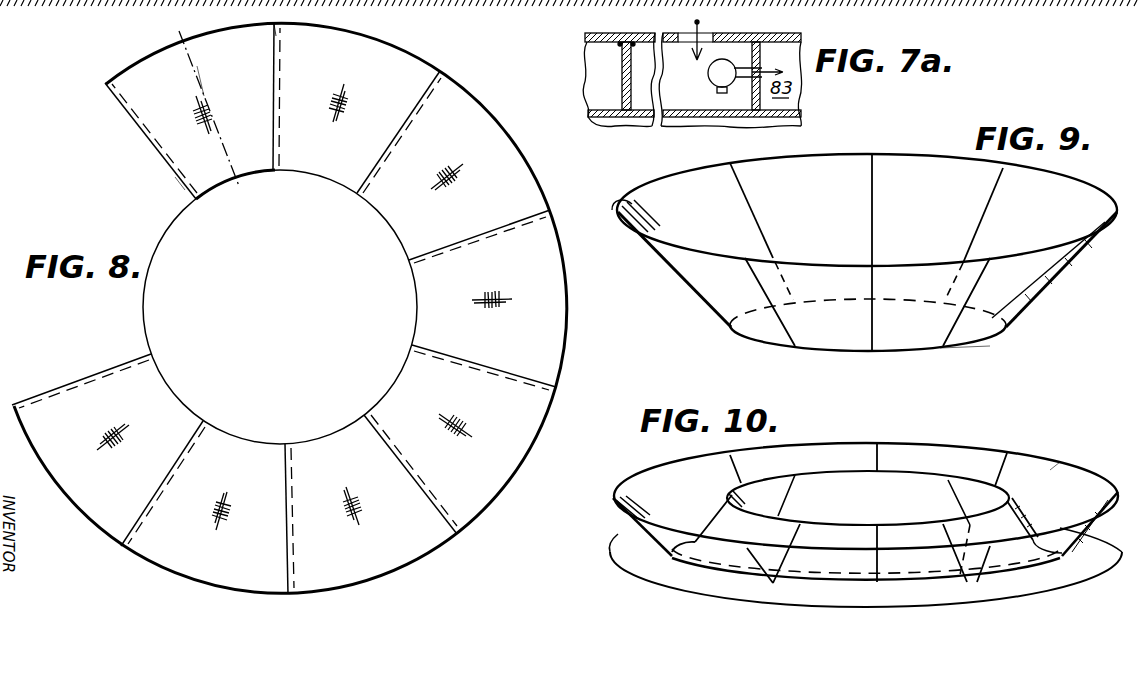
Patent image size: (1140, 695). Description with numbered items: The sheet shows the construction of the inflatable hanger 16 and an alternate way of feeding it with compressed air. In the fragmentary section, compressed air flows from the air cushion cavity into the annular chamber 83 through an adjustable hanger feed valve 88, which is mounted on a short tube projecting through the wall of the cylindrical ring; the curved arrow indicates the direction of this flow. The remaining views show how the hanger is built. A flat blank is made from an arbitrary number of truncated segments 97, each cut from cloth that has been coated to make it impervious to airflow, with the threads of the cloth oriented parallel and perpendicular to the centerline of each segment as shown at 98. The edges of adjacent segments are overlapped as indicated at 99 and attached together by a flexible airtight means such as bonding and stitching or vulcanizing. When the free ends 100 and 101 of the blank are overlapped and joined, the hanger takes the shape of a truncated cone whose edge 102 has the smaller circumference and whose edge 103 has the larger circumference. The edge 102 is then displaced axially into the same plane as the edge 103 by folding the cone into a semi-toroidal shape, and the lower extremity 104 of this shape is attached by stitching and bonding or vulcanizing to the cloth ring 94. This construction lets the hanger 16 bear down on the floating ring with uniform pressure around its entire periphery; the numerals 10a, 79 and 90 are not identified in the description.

In FIG. 7A, the wall structure 10a is at (594, 33).
In FIG. 8, the inflatable hanger 16 is at (94, 135).
In FIG. 9, the inflatable hanger 16 is at (688, 290).
In FIG. 10, the inflatable hanger 16 is at (865, 513).
In FIG. 7A, the inlet opening 79 is at (697, 22).
In FIG. 7A, the annular chamber 83 is at (612, 98).
In FIG. 7A, the adjustable hanger feed valve 88 is at (727, 59).
In FIG. 7A, the chamber 90 is at (698, 102).
In FIG. 10, the cloth ring 94 is at (1018, 588).
In FIG. 8, the truncated segments 97 is at (117, 62).
In FIG. 8, the centerline 98 is at (196, 62).
In FIG. 8, the overlapped edges 99 is at (277, 27).
In FIG. 8, the free end 100 is at (168, 168).
In FIG. 8, the free end 101 is at (116, 358).
In FIG. 9, the edge of smaller circumference 102 is at (962, 346).
In FIG. 10, the edge of smaller circumference 102 is at (848, 471).
In FIG. 9, the edge of larger circumference 103 is at (1058, 182).
In FIG. 10, the edge of larger circumference 103 is at (1062, 463).
In FIG. 10, the lower extremity 104 is at (1050, 566).